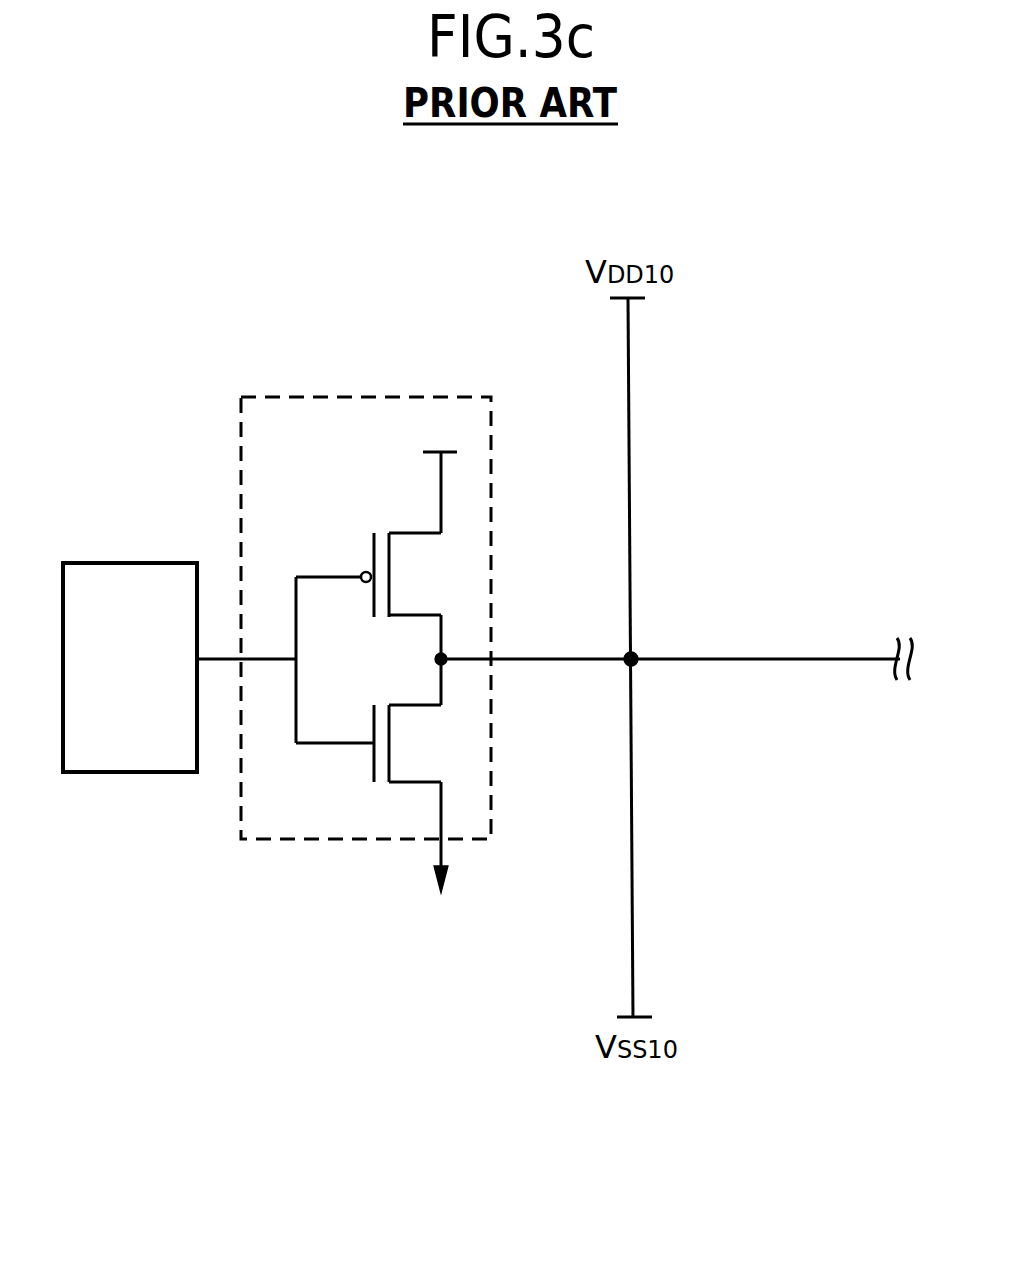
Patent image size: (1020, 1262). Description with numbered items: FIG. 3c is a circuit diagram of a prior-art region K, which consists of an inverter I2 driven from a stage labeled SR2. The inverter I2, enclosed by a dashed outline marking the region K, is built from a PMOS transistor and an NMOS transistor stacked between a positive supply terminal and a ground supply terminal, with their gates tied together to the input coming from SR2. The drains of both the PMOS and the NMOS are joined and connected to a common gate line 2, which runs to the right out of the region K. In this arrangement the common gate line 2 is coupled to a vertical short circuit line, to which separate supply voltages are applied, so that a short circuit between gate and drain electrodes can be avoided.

The common gate line 2 is at (782, 656).
The inverter I2 is at (368, 396).
The region K is at (256, 453).
The shift register SR2 is at (130, 667).